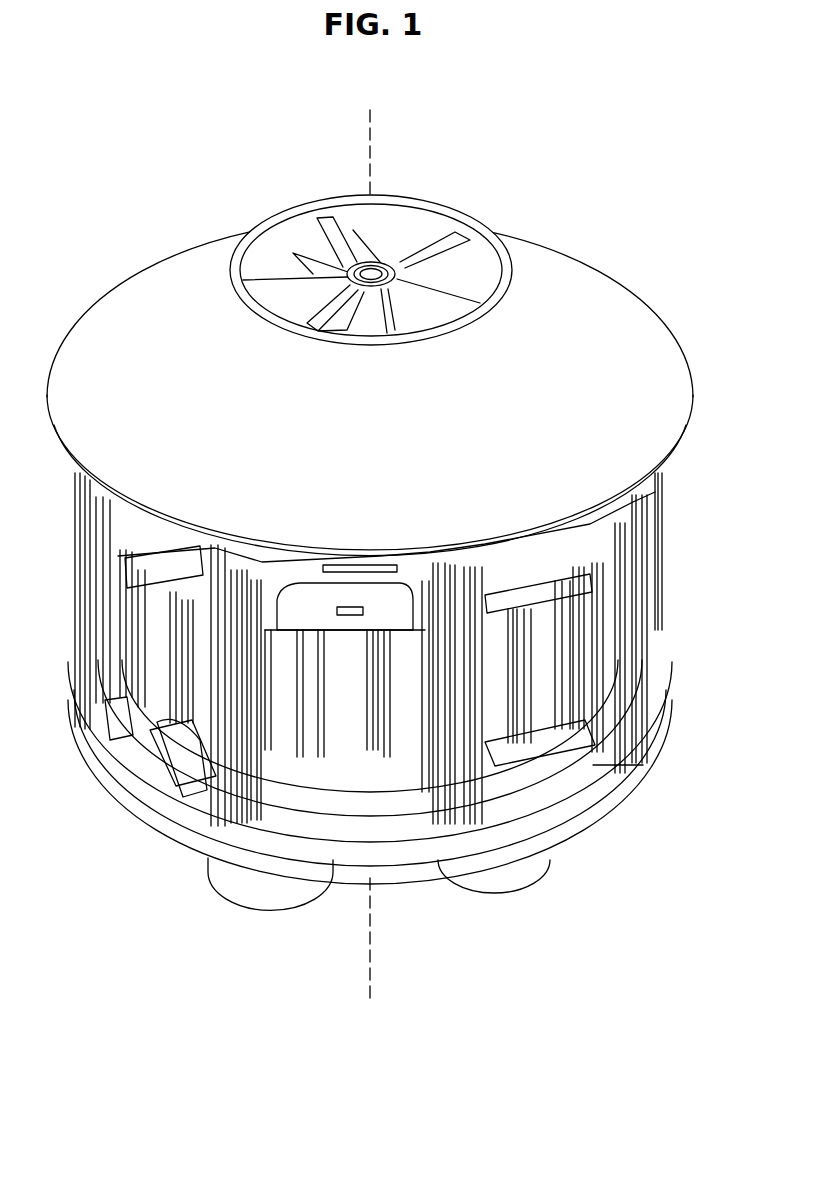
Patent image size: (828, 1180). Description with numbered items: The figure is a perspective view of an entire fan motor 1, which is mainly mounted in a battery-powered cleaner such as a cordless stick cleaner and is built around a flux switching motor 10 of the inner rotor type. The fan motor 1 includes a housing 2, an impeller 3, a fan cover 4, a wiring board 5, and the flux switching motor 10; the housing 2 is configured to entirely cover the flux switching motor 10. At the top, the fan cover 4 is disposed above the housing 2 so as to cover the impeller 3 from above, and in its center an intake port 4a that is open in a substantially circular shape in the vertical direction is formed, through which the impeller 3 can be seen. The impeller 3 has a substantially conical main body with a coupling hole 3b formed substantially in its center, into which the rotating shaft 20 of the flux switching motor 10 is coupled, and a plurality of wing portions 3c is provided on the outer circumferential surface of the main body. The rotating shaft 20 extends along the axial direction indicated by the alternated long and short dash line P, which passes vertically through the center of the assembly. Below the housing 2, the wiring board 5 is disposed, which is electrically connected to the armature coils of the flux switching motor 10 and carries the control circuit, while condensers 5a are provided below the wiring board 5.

The fan motor 1 is at (585, 193).
The housing 2 is at (214, 777).
The impeller 3 is at (346, 304).
The coupling hole 3b is at (318, 285).
The wing portions 3c is at (437, 252).
The fan cover 4 is at (627, 337).
The intake port 4a is at (399, 212).
The wiring board 5 is at (597, 825).
The condensers 5a is at (307, 892).
The flux switching motor 10 is at (283, 710).
The rotating shaft 20 is at (400, 268).
The axial direction P is at (372, 124).